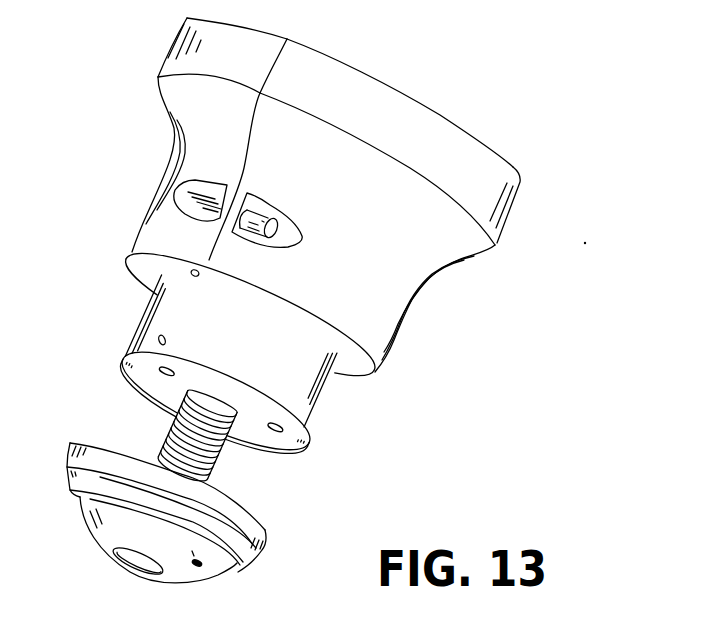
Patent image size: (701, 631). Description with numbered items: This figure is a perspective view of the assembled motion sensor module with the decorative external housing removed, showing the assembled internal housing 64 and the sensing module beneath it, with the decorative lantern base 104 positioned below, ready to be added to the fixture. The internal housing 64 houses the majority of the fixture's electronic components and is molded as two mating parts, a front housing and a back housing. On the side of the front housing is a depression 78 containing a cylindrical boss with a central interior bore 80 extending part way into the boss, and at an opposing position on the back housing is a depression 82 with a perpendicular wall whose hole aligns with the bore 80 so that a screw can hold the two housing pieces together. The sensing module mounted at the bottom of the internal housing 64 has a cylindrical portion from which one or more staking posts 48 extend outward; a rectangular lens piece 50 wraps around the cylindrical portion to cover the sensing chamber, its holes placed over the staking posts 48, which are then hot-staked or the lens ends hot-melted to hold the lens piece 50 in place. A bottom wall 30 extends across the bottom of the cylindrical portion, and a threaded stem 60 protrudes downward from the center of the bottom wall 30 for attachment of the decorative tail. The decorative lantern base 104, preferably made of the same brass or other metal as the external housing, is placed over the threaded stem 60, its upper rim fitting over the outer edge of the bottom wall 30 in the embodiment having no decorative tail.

The internal housing 64 is at (513, 167).
The depression 82 is at (212, 188).
The central interior bore 80 is at (253, 217).
The depression 78 is at (296, 233).
The staking posts 48 is at (198, 277).
The lens piece 50 is at (322, 393).
The bottom wall 30 is at (300, 441).
The threaded stem 60 is at (222, 472).
The decorative lantern base 104 is at (265, 557).